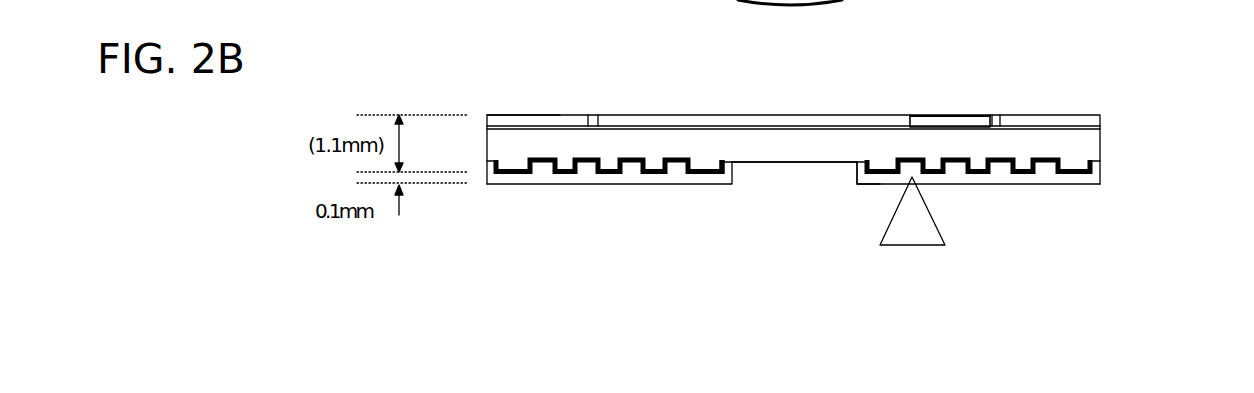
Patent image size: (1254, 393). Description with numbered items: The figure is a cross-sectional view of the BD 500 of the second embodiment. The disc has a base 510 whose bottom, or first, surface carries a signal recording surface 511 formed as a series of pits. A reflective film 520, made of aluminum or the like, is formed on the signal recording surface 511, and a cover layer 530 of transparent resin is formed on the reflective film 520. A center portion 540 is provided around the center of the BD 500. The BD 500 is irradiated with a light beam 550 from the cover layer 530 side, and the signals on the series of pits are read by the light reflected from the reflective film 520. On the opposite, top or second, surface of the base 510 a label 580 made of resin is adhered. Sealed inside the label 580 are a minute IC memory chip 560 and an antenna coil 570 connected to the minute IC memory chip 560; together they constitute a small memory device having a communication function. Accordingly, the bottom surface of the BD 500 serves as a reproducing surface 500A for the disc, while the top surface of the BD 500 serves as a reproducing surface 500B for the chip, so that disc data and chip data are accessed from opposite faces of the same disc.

The BD 500 is at (808, 115).
The reproducing surface for the disc 500A is at (858, 186).
The reproducing surface for the chip 500B is at (540, 115).
The base 510 is at (1090, 138).
The signal recording surface 511 is at (705, 173).
The reflective film 520 is at (1068, 168).
The cover layer 530 is at (1093, 185).
The center portion 540 is at (753, 165).
The light beam 550 is at (922, 220).
The minute IC memory chip 560 is at (945, 118).
The antenna coil 570 is at (593, 115).
The label 580 is at (1072, 120).